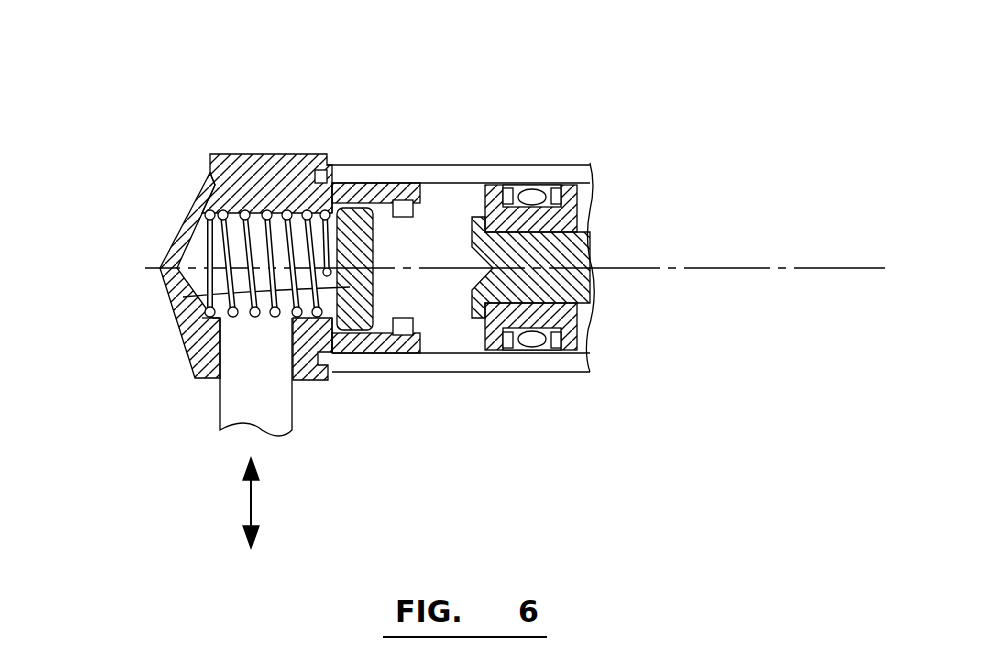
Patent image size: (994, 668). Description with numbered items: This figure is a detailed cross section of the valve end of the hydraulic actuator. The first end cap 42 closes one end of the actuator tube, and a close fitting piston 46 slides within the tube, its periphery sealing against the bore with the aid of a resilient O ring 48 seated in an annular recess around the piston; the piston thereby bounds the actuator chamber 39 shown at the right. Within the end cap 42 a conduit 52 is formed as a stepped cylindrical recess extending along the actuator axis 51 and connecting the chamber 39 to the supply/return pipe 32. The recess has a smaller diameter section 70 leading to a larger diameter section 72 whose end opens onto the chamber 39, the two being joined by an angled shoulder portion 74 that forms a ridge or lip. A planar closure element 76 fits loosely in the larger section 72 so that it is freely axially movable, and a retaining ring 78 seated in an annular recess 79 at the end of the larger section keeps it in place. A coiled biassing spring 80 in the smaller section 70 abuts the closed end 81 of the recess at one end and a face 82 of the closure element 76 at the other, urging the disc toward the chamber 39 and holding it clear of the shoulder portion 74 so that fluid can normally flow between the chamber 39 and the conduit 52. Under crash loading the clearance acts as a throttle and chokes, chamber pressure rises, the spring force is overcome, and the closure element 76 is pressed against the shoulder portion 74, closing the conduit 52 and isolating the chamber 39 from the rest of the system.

The supply/return pipe 32 is at (240, 400).
The actuator chamber 39 is at (427, 293).
The first end cap 42 is at (222, 153).
The piston 46 is at (490, 212).
The O ring 48 is at (530, 192).
The actuator axis 51 is at (778, 270).
The conduit 52 is at (307, 330).
The smaller diameter section 70 is at (255, 153).
The larger diameter section 72 is at (360, 160).
The shoulder portion 74 is at (303, 153).
The closure element 76 is at (355, 312).
The retaining ring 78 is at (405, 195).
The annular recess 79 is at (432, 350).
The coiled biassing spring 80 is at (188, 232).
The closed end 81 is at (173, 228).
The face 82 is at (178, 312).